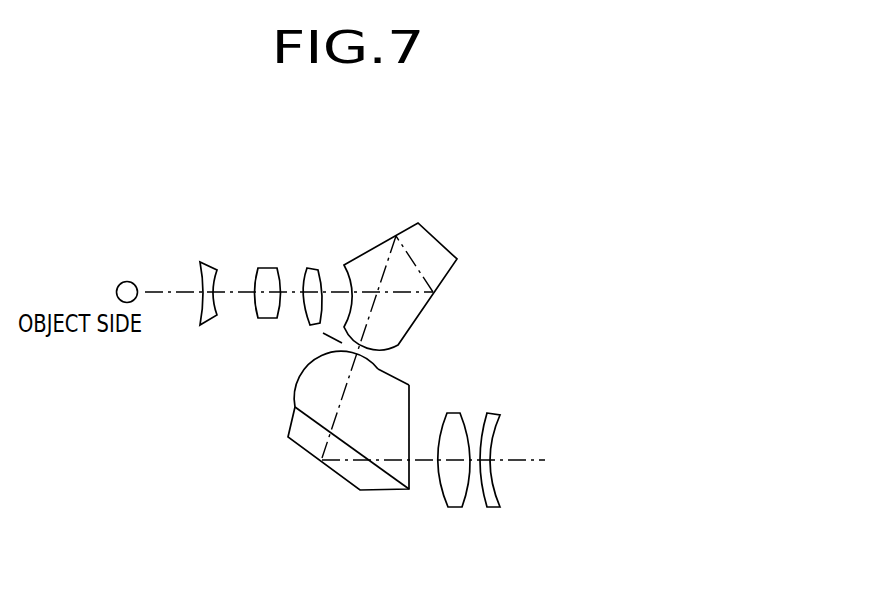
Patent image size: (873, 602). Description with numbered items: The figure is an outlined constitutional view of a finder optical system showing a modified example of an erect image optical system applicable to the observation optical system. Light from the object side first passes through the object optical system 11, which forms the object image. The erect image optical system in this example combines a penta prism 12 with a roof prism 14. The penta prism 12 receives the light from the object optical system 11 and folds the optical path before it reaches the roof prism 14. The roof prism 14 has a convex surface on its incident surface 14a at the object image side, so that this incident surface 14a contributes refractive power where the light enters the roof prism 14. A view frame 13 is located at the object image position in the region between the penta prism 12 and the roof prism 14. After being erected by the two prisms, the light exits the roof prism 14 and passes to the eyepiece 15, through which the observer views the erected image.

The object optical system 11 is at (325, 262).
The penta prism 12 is at (402, 232).
The view frame 13 is at (397, 361).
The roof prism 14 is at (309, 375).
The incident surface 14a is at (390, 370).
The eyepiece 15 is at (432, 507).